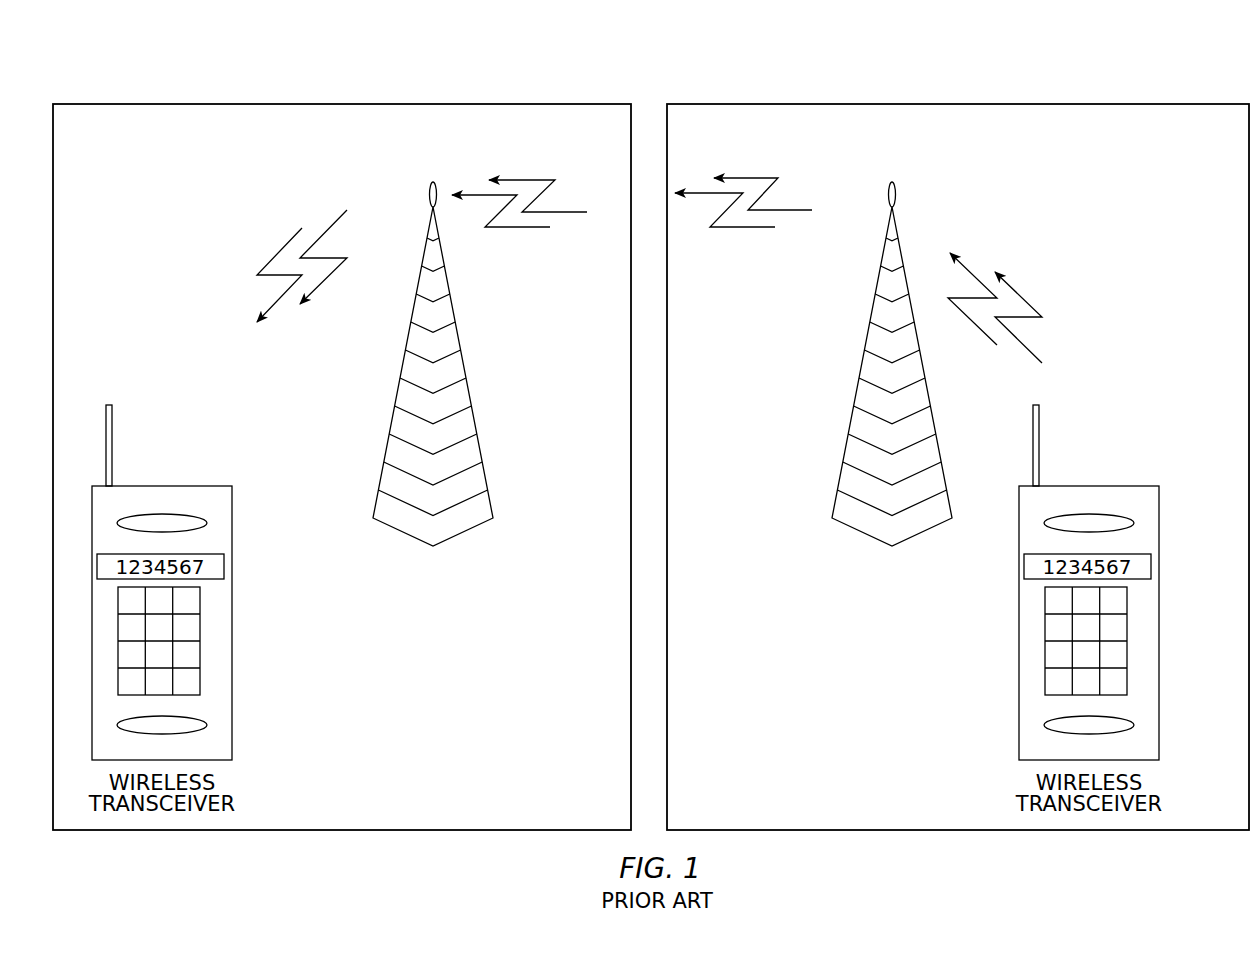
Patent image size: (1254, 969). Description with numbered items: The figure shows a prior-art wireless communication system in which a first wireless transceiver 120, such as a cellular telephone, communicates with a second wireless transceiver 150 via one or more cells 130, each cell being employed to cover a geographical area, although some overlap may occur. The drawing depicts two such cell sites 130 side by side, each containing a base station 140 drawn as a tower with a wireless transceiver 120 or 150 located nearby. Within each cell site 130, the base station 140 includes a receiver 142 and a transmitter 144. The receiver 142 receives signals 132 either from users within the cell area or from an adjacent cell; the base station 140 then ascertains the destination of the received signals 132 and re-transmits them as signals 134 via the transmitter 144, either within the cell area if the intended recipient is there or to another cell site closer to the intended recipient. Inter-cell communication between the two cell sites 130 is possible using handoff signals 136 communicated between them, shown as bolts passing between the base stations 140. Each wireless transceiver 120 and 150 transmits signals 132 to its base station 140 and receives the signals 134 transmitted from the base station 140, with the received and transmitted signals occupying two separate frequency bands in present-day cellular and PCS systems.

The first wireless transceiver 120 is at (1181, 594).
The cell 130 is at (616, 91).
The received signals 132 is at (1042, 287).
The re-transmitted signals 134 is at (265, 247).
The handoff signals 136 is at (569, 188).
The base station 140 is at (484, 348).
The receiver 142 is at (431, 181).
The transmitter 144 is at (429, 199).
The second wireless transceiver 150 is at (261, 604).